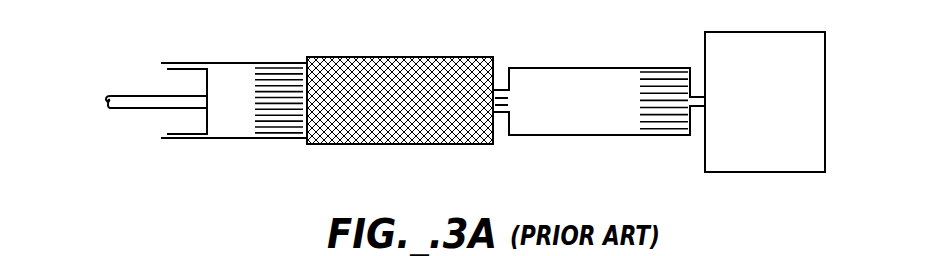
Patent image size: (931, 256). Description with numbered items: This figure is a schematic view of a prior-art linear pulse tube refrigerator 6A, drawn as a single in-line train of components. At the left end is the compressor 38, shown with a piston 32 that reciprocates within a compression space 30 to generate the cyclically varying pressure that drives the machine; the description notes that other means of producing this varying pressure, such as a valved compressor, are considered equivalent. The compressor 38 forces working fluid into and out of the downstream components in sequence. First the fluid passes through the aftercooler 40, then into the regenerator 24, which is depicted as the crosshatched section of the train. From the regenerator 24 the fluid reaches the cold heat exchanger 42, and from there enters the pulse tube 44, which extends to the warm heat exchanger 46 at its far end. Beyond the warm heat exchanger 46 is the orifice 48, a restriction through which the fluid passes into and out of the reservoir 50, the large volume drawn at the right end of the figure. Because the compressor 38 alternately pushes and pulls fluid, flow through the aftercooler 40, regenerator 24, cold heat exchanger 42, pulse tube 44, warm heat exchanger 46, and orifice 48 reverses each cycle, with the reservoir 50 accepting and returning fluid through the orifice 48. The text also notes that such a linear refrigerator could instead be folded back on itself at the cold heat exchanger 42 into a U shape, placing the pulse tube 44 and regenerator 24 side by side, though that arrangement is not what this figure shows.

The linear pulse tube refrigerator 6A is at (408, 167).
The regenerator 24 is at (405, 72).
The compression space 30 is at (235, 139).
The piston 32 is at (197, 67).
The compressor 38 is at (173, 62).
The aftercooler 40 is at (278, 62).
The cold heat exchanger 42 is at (502, 114).
The pulse tube 44 is at (590, 136).
The warm heat exchanger 46 is at (663, 67).
The orifice 48 is at (698, 108).
The reservoir 50 is at (760, 32).